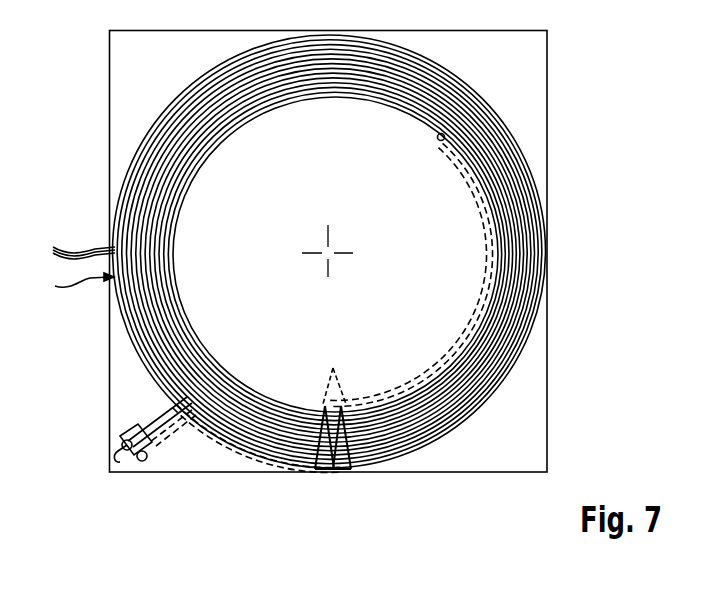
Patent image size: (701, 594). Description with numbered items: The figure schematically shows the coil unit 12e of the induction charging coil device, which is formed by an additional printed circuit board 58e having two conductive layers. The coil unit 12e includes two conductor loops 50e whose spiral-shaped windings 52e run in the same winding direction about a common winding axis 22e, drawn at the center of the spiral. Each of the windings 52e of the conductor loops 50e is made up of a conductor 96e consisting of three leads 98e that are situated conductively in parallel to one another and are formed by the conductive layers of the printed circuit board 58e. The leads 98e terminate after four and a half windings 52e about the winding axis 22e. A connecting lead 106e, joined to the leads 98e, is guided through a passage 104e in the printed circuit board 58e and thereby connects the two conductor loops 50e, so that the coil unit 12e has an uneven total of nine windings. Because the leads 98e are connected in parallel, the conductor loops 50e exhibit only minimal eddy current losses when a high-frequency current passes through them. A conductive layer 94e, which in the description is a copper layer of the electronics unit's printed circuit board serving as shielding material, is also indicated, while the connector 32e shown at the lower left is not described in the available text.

The coil unit 12e is at (110, 97).
The printed circuit board 58e is at (527, 114).
The connecting lead 106e is at (437, 137).
The passage 104e is at (446, 141).
The winding axis 22e is at (327, 252).
The leads 98e is at (66, 249).
The conductor 96e is at (66, 282).
The conductive layer 94e is at (126, 321).
The spiral-shaped windings 52e is at (131, 343).
The connector 32e is at (125, 450).
The conductor loops 50e is at (333, 370).